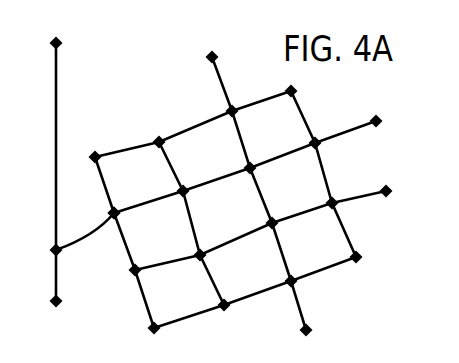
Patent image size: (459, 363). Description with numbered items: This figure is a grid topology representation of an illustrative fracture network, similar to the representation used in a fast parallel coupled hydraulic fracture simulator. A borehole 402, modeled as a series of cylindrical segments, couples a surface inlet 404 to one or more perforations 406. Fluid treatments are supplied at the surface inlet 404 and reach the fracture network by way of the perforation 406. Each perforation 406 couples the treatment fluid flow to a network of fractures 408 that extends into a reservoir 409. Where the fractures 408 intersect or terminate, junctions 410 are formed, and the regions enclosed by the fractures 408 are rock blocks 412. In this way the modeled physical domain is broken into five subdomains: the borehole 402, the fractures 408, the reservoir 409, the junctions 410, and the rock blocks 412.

The borehole 402 is at (55, 138).
The surface inlet 404 is at (52, 42).
The perforation 406 is at (52, 250).
The fractures 408 is at (122, 242).
The reservoir 409 is at (154, 108).
The junctions 410 is at (208, 56).
The rock blocks 412 is at (158, 188).